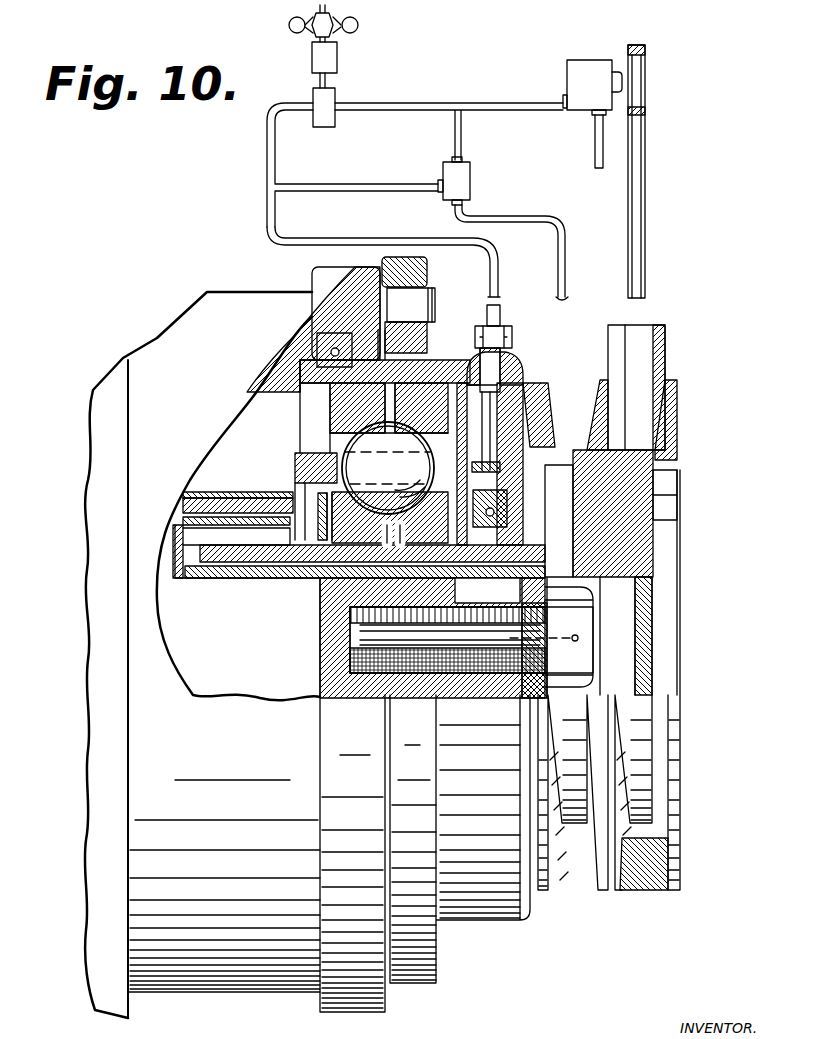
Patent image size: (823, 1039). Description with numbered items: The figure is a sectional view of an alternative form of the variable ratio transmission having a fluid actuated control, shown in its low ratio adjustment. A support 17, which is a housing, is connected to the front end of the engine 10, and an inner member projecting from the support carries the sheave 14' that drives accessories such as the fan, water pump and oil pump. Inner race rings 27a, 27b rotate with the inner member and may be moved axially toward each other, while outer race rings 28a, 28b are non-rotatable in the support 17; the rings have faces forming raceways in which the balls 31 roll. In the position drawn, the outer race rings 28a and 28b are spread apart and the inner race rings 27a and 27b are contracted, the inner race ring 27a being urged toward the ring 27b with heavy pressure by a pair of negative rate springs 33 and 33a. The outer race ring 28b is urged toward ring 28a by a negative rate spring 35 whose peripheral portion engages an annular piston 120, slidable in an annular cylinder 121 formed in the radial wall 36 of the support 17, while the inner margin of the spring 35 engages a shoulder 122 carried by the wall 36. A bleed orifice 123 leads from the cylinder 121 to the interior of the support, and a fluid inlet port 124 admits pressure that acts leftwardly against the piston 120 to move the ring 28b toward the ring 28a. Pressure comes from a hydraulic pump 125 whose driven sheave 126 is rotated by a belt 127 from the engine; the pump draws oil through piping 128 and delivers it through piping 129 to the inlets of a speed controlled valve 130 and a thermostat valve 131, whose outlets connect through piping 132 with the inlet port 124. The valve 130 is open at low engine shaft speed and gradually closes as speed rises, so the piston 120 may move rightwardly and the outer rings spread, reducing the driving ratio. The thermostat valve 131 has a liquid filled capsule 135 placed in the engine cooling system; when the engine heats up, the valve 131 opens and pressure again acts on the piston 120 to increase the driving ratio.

The engine 10 is at (156, 338).
The sheave 14' is at (632, 451).
The support 17 is at (531, 339).
The inner race ring 27a is at (388, 468).
The inner race ring 27b is at (428, 528).
The outer race ring 28a is at (340, 408).
The outer race ring 28b is at (423, 410).
The balls 31 is at (360, 440).
The negative rate spring 33 is at (295, 497).
The negative rate spring 33a is at (305, 500).
The negative rate spring 35 is at (475, 403).
The radial wall 36 is at (513, 405).
The annular piston 120 is at (497, 373).
The annular cylinder 121 is at (482, 475).
The shoulder 122 is at (477, 468).
The bleed orifice 123 is at (487, 527).
The fluid inlet port 124 is at (503, 360).
The hydraulic pump 125 is at (337, 55).
The driven sheave 126 is at (645, 70).
The belt 127 is at (640, 135).
The piping 128 is at (597, 135).
The piping 129 is at (473, 100).
The speed controlled valve 130 is at (328, 100).
The thermostat valve 131 is at (464, 182).
The piping 132 is at (388, 238).
The liquid filled capsule 135 is at (575, 297).